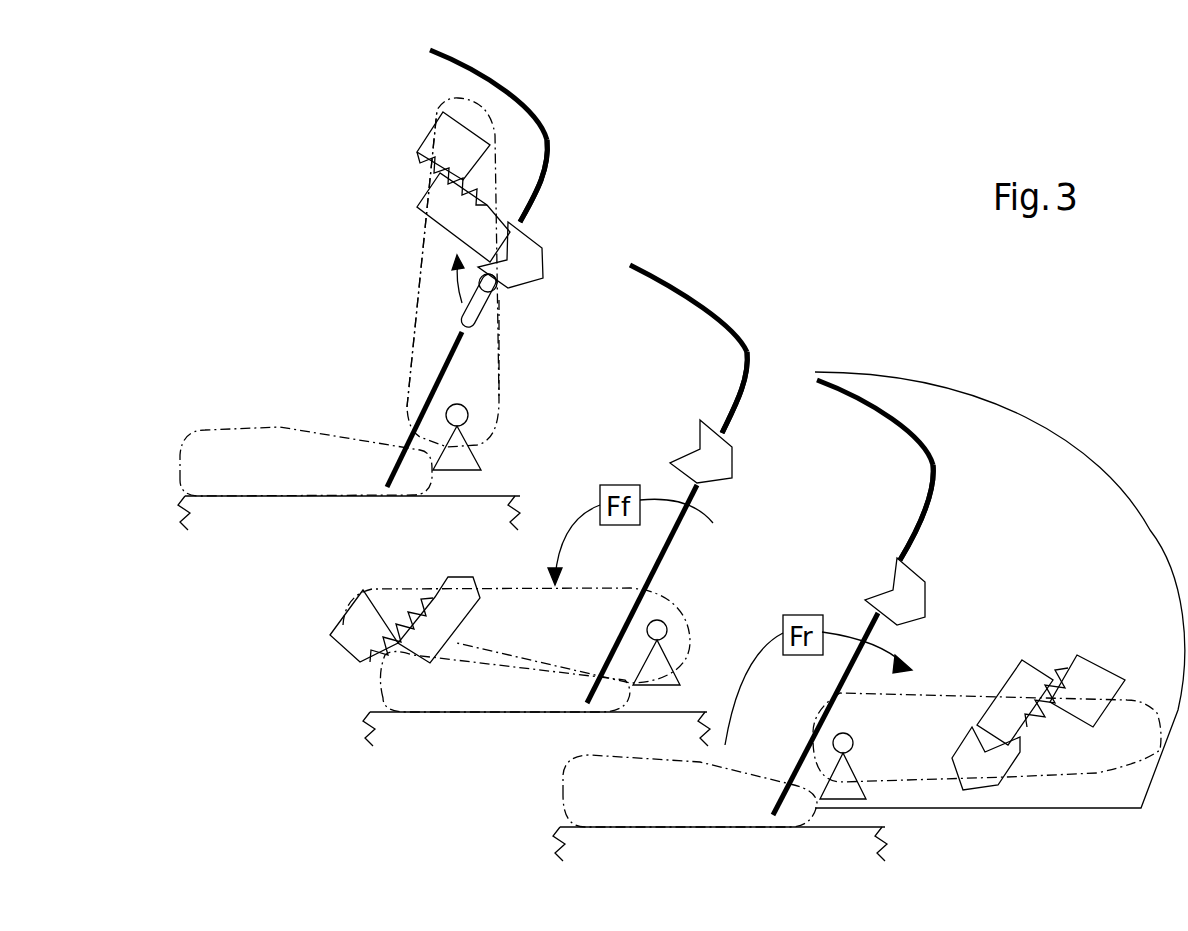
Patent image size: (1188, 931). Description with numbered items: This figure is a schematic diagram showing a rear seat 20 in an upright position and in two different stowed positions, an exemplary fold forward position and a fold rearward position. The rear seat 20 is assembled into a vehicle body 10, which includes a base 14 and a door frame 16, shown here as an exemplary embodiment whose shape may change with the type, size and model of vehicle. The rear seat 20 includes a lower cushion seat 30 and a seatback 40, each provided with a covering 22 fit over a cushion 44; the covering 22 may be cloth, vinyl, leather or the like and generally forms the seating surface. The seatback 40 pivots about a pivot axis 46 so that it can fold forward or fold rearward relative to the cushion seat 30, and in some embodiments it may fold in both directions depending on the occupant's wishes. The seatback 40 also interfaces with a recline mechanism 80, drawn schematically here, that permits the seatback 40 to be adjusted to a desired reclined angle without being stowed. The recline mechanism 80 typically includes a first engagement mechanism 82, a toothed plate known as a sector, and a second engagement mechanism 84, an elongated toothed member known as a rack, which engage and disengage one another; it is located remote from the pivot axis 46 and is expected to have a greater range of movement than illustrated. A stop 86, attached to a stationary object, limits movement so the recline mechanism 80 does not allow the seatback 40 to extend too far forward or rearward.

The vehicle body 10 is at (543, 113).
The base 14 is at (185, 498).
The door frame 16 is at (545, 172).
The rear seat 20 is at (412, 285).
The covering 22 is at (424, 233).
The cushion seat 30 is at (225, 463).
The seatback 40 is at (912, 743).
The cushion 44 is at (948, 690).
The pivot axis 46 is at (468, 418).
The recline mechanism 80 is at (410, 182).
The first engagement mechanism 82 is at (468, 128).
The second engagement mechanism 84 is at (425, 205).
The stop 86 is at (537, 262).